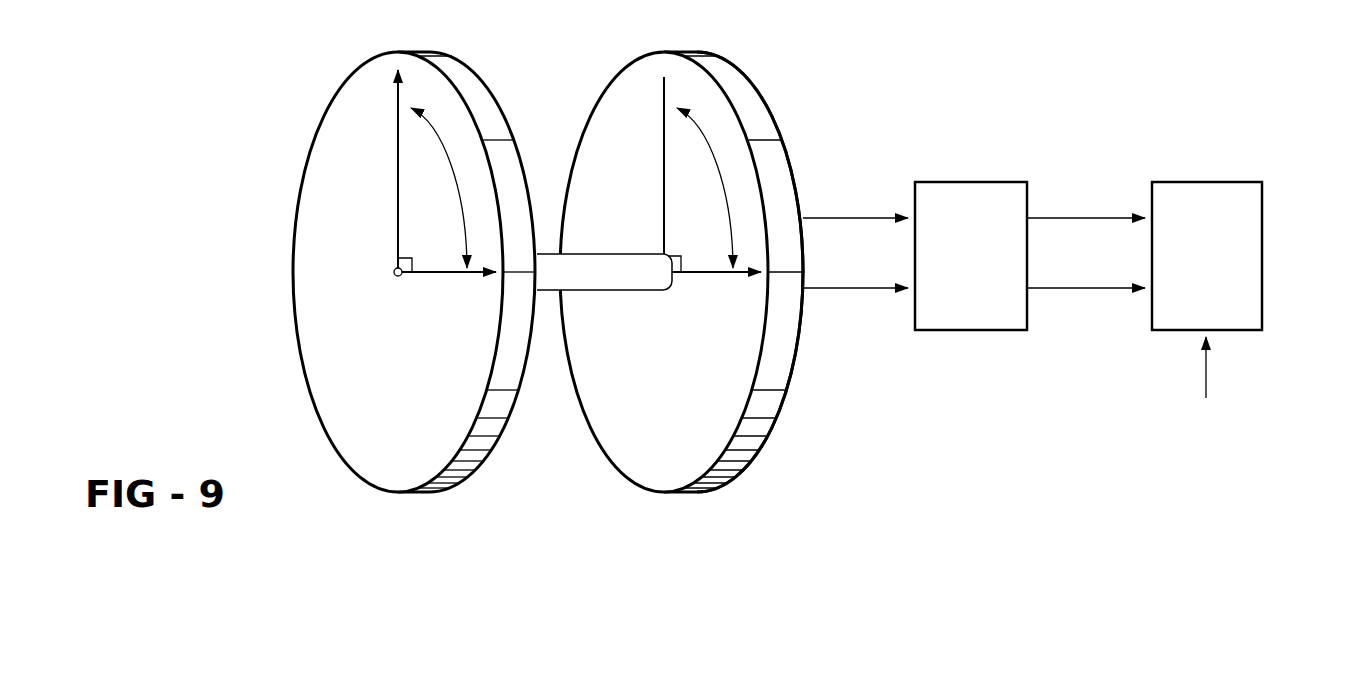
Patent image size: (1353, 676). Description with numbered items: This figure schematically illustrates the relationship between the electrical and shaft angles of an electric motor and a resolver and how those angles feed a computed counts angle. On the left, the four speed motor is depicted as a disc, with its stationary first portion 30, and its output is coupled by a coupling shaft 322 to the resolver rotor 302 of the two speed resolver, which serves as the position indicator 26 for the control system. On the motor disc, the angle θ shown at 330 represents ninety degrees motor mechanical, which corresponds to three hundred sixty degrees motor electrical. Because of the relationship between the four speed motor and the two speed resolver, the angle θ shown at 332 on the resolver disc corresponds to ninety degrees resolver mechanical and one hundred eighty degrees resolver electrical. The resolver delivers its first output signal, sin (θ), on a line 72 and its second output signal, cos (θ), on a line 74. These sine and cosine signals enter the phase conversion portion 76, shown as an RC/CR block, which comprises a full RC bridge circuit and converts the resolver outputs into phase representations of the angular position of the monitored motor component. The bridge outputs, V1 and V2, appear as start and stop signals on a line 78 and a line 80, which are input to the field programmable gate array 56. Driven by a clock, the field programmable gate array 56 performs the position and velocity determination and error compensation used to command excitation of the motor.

The first portion 30 is at (340, 420).
The position indicator 26 is at (590, 460).
The resolver rotor 302 is at (766, 413).
The coupling shaft 322 is at (611, 265).
The motor mechanical angle θ 330 is at (448, 130).
The resolver mechanical angle θ 332 is at (716, 138).
The line 72 is at (826, 218).
The line 74 is at (822, 290).
The phase conversion portion 76 is at (1027, 322).
The line 78 is at (1045, 218).
The line 80 is at (1047, 290).
The field programmable gate array 56 is at (1262, 282).